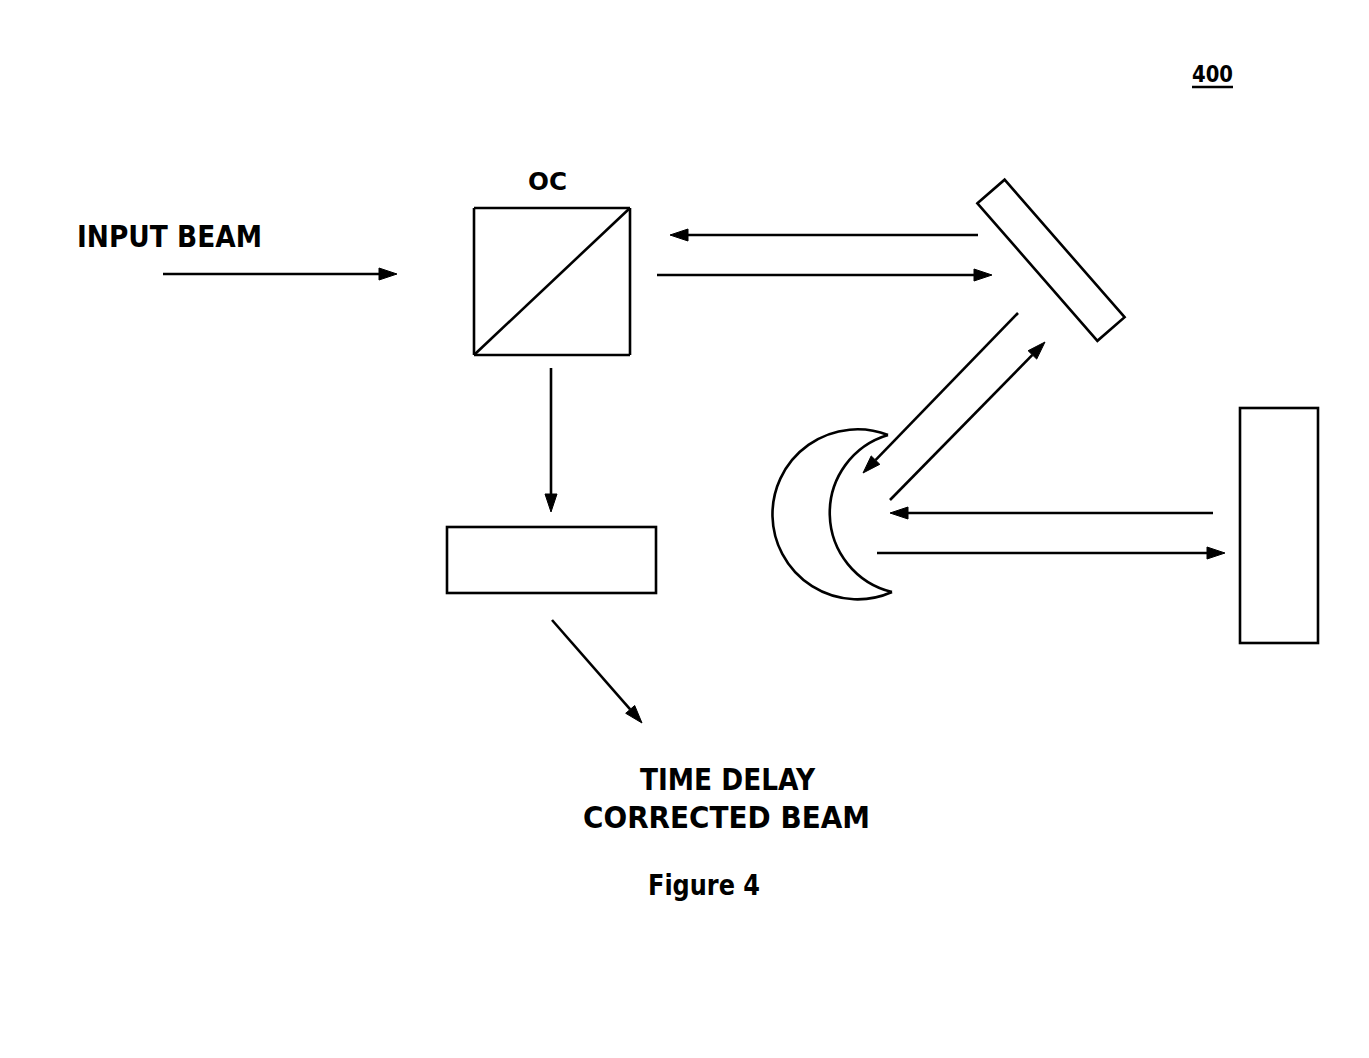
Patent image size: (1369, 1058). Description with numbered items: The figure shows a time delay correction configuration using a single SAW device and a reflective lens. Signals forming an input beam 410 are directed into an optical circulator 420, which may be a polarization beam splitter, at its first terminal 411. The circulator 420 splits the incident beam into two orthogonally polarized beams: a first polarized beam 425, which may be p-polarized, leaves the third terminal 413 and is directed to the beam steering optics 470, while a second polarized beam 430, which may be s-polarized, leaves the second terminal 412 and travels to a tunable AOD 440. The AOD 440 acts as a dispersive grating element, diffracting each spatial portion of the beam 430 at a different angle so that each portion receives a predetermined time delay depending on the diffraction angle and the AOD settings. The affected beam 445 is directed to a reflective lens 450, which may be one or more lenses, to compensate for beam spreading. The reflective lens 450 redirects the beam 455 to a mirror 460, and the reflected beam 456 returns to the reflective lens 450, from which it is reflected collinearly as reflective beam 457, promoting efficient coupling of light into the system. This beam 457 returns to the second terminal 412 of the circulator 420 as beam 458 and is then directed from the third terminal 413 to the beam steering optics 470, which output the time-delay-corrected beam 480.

The input beam 410 is at (202, 274).
The first terminal 411 is at (474, 258).
The second terminal 412 is at (630, 247).
The third terminal 413 is at (525, 355).
The optical circulator 420 is at (474, 315).
The first polarized beam 425 is at (551, 420).
The second polarized beam 430 is at (747, 275).
The tunable AOD 440 is at (1070, 247).
The affected beam 445 is at (927, 405).
The reflective lens 450 is at (823, 580).
The beam directed to mirror 455 is at (1097, 555).
The reflected beam 456 is at (1083, 512).
The reflective beam 457 is at (968, 435).
The returned beam 458 is at (838, 233).
The mirror 460 is at (1307, 408).
The beam steering optics 470 is at (617, 527).
The time-delay-corrected beam 480 is at (642, 698).